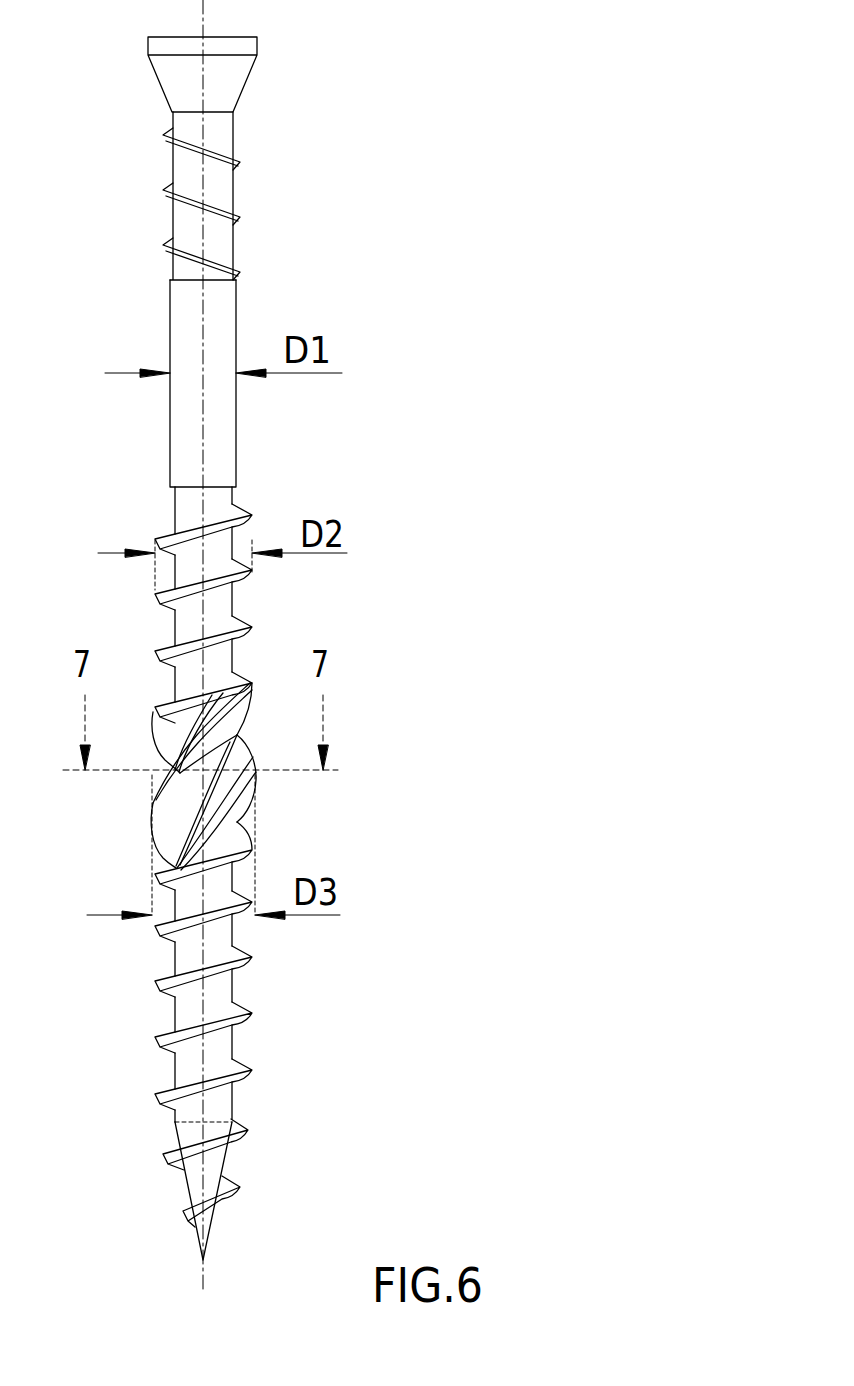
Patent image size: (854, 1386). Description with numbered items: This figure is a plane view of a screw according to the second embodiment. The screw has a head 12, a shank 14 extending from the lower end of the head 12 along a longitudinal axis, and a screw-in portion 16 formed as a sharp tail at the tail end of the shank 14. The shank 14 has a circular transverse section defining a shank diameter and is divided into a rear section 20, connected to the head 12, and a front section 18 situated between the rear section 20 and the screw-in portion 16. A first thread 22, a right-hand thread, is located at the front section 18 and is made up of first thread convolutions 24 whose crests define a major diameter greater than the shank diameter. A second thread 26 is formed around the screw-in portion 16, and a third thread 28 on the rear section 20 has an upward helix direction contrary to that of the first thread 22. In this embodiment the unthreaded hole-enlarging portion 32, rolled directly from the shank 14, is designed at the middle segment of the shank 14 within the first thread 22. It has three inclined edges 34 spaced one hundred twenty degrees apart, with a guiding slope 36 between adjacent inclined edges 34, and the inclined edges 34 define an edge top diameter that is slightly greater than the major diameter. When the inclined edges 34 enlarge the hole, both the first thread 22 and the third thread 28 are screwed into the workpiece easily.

The head 12 is at (243, 71).
The shank 14 is at (224, 452).
The screw-in portion 16 is at (206, 1191).
The front section 18 is at (190, 1010).
The rear section 20 is at (228, 247).
The first thread 22 is at (206, 837).
The first thread convolutions 24 is at (247, 1027).
The second thread 26 is at (232, 1187).
The third thread 28 is at (242, 167).
The hole-enlarging portion 32 is at (268, 791).
The inclined edges 34 is at (173, 807).
The guiding slope 36 is at (177, 830).